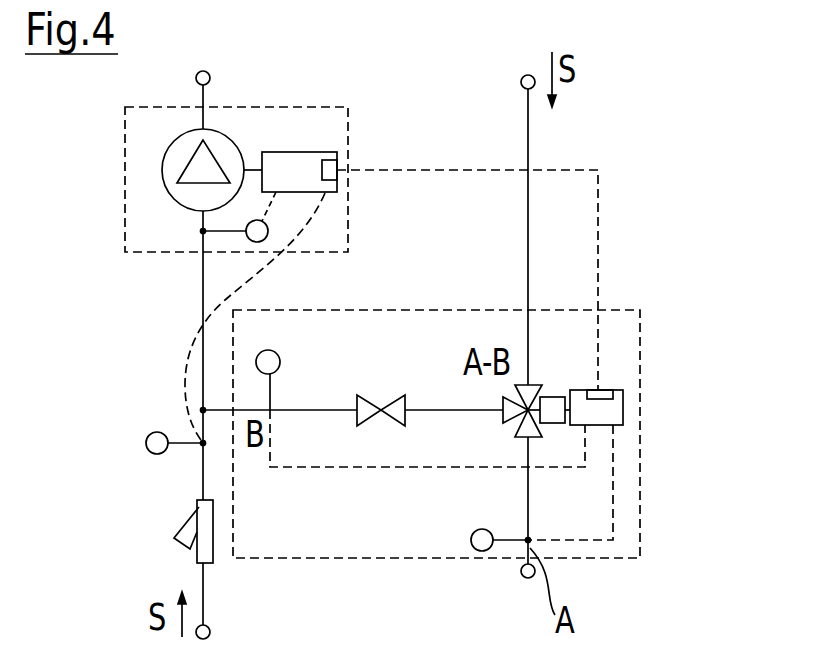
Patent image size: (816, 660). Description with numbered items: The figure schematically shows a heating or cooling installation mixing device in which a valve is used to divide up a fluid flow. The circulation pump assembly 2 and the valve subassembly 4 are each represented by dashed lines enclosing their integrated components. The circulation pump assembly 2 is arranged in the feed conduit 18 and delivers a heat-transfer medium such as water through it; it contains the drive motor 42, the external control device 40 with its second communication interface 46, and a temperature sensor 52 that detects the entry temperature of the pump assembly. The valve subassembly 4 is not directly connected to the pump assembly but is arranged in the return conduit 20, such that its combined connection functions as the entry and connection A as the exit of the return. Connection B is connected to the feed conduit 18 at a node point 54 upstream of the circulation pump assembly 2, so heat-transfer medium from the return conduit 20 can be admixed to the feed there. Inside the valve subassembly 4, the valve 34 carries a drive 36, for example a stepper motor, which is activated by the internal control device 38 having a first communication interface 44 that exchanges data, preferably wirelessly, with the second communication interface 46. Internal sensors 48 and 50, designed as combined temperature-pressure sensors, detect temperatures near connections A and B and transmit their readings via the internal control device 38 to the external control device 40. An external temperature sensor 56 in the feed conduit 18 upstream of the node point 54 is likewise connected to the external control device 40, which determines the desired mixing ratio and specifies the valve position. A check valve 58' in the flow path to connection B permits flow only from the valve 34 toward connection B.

The circulation pump assembly 2 is at (122, 173).
The valve subassembly 4 is at (640, 335).
The feed conduit 18 is at (209, 84).
The return conduit 20 is at (531, 140).
The valve 34 is at (510, 427).
The drive 36 is at (560, 407).
The internal control device 38 is at (613, 418).
The external control device 40 is at (305, 160).
The drive motor 42 is at (231, 145).
The first communication interface 44 is at (623, 392).
The second communication interface 46 is at (338, 168).
The internal sensor 48 is at (510, 541).
The second temperature sensor 50 is at (269, 393).
The sensor 52 is at (235, 233).
The node point 54 is at (203, 409).
The external temperature sensor 56 is at (193, 446).
The check valve 58' is at (395, 374).